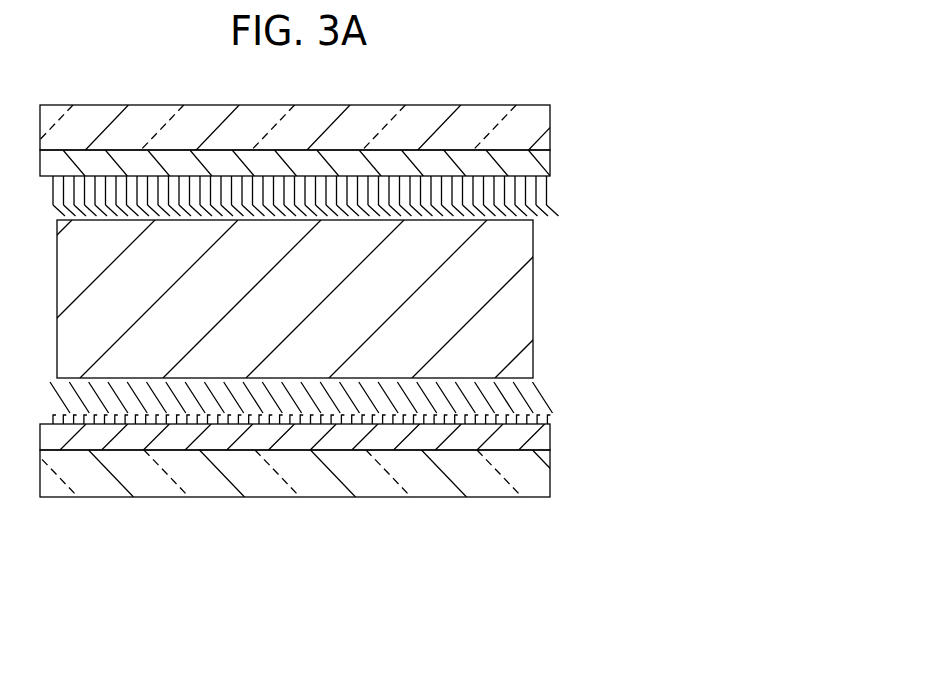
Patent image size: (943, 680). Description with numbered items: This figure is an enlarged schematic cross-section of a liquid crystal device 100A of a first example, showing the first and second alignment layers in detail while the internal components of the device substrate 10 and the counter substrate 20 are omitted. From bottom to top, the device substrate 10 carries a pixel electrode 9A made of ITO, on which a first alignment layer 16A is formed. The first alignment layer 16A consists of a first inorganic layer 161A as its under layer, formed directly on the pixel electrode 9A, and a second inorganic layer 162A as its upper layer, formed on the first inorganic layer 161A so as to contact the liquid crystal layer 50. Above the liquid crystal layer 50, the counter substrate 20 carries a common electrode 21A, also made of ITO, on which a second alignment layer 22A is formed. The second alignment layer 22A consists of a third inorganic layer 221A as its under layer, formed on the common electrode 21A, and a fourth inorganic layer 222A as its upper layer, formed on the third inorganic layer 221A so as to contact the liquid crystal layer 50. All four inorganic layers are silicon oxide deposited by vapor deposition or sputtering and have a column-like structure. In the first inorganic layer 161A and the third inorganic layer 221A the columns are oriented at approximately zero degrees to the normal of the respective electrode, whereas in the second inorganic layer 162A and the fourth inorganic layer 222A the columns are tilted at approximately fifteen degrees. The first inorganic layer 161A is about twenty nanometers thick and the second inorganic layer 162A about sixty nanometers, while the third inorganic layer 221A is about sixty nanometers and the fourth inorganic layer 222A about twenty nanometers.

The liquid crystal device 100A is at (616, 67).
The counter substrate 20 is at (525, 123).
The common electrode 21A is at (542, 160).
The second alignment layer 22A is at (406, 212).
The third inorganic layer 221A is at (574, 193).
The fourth inorganic layer 222A is at (573, 213).
The liquid crystal layer 50 is at (522, 305).
The first alignment layer 16A is at (402, 396).
The second inorganic layer 162A is at (574, 397).
The first inorganic layer 161A is at (573, 422).
The pixel electrode 9A is at (540, 440).
The device substrate 10 is at (540, 477).